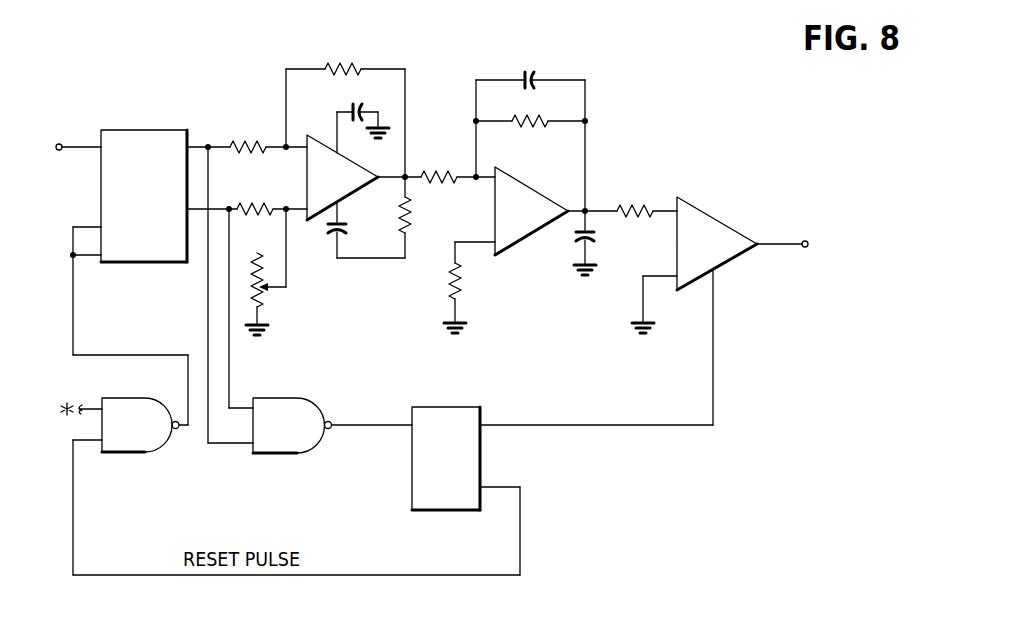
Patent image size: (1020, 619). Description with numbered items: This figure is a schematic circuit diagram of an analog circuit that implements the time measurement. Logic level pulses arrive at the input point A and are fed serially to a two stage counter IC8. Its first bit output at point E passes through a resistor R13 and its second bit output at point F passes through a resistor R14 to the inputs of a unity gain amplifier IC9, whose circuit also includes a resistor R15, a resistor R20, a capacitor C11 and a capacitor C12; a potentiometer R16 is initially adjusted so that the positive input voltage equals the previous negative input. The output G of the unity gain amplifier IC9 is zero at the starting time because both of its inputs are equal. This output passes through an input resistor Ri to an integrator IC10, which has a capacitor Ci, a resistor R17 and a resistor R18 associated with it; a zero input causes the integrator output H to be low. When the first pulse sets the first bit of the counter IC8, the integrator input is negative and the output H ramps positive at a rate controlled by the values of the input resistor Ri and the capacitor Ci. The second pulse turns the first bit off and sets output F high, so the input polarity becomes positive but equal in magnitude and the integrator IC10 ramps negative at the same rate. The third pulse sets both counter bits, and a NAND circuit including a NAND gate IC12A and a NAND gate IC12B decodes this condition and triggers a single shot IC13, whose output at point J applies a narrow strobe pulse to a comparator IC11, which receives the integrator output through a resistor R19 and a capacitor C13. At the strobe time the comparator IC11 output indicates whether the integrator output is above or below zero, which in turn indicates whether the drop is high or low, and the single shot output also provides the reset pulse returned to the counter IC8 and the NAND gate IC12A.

The two stage counter IC8 is at (157, 130).
The unity gain amplifier IC9 is at (321, 147).
The integrator IC10 is at (530, 190).
The comparator IC11 is at (716, 221).
The NAND gate IC12A is at (149, 398).
The NAND gate IC12B is at (288, 400).
The single shot IC13 is at (477, 464).
The resistor R13 is at (252, 142).
The resistor R14 is at (265, 204).
The resistor R15 is at (349, 64).
The potentiometer R16 is at (257, 252).
The resistor R17 is at (524, 126).
The resistor R18 is at (462, 284).
The resistor R19 is at (633, 190).
The resistor R20 is at (411, 216).
The input resistor Ri is at (441, 168).
The capacitor C11 is at (360, 104).
The capacitor C12 is at (348, 230).
The capacitor C13 is at (572, 244).
The integrating capacitor Ci is at (532, 68).
The input point A is at (70, 149).
The waveform point E is at (222, 276).
The waveform point F is at (196, 220).
The waveform point G is at (402, 160).
The waveform point H is at (592, 197).
The waveform point J is at (596, 347).